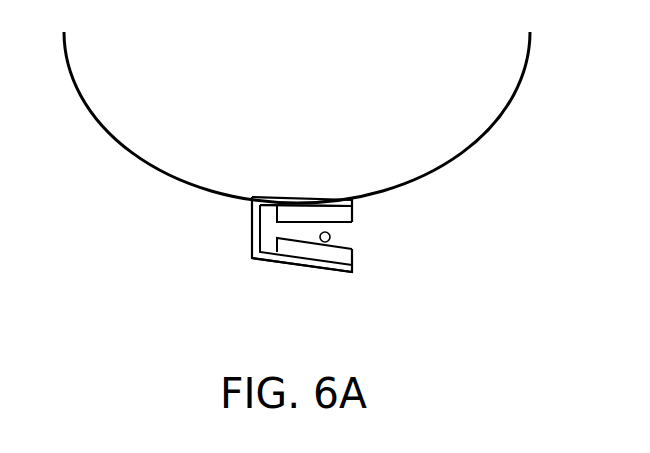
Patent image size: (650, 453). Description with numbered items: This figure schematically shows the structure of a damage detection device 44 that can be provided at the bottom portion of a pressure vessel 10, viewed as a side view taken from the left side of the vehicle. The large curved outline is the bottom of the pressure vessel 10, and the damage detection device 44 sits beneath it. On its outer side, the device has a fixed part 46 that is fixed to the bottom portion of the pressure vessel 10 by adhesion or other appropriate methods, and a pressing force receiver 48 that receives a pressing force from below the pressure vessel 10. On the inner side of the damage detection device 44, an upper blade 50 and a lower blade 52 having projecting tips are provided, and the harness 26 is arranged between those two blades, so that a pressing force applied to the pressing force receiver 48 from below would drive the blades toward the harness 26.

The pressure vessel 10 is at (472, 142).
The damage detection device 44 is at (238, 231).
The fixed part 46 is at (295, 196).
The pressing force receiver 48 is at (312, 266).
The upper blade 50 is at (347, 227).
The lower blade 52 is at (353, 256).
The harness 26 is at (340, 238).